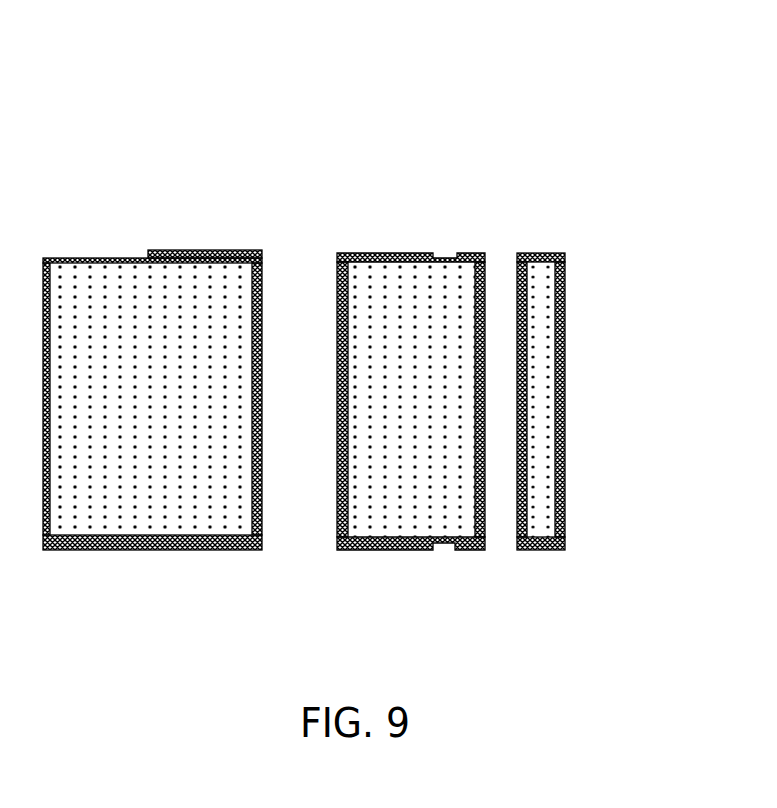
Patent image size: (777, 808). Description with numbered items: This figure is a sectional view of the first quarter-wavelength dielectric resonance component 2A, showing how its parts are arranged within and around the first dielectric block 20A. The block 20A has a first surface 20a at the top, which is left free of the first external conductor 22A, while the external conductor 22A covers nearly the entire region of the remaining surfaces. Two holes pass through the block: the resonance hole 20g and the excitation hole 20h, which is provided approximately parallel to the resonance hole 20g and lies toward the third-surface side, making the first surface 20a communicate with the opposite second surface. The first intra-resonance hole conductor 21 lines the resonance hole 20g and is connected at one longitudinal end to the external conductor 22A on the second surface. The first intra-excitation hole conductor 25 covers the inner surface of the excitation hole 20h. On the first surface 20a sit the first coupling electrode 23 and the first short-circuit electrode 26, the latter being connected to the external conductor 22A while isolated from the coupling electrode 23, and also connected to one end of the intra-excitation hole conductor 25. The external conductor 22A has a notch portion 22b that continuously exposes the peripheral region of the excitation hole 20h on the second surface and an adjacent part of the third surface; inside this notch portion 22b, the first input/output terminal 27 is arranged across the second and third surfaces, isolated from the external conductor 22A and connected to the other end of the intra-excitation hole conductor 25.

The first ¼ wavelength dielectric resonance component 2A is at (357, 328).
The first surface 20a is at (95, 260).
The first dielectric block 20A is at (97, 502).
The first intra-resonance hole conductor 21 is at (262, 507).
The first external conductor 22A is at (148, 550).
The first coupling electrode 23 is at (220, 255).
The resonance hole 20g is at (293, 289).
The excitation hole 20h is at (505, 270).
The first intra-excitation hole conductor 25 is at (490, 507).
The first short-circuit electrode 26 is at (547, 253).
The notch portion 22b is at (566, 489).
The first input/output terminal 27 is at (550, 553).